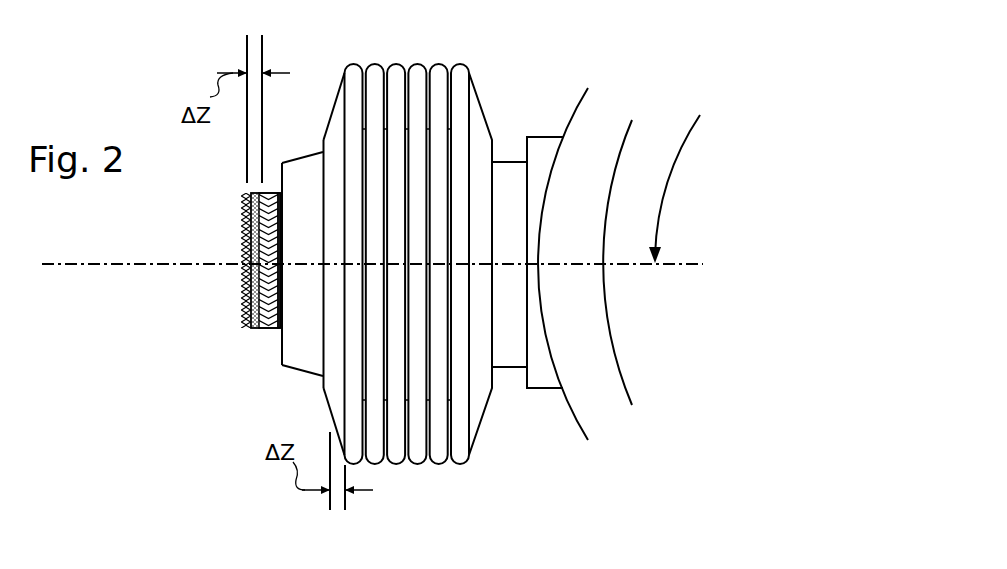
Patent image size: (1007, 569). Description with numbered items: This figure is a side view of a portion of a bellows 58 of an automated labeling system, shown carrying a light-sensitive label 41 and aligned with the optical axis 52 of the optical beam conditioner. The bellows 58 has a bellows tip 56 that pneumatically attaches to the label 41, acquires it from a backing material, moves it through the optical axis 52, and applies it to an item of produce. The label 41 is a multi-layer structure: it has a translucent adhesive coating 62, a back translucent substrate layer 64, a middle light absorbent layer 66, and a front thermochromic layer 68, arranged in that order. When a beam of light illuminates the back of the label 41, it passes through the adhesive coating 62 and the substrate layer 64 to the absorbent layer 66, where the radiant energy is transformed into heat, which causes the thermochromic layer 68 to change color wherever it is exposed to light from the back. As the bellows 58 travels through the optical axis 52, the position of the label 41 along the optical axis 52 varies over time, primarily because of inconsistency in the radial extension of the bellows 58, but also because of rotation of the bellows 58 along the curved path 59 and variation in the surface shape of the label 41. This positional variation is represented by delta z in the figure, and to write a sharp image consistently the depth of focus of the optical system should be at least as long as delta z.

The light-sensitive label 41 is at (244, 299).
The optical axis 52 is at (109, 262).
The bellows tip 56 is at (298, 158).
The bellows 58 is at (590, 58).
The curved path 59 is at (667, 178).
The translucent adhesive coating 62 is at (245, 329).
The translucent substrate layer 64 is at (257, 330).
The light absorbent layer 66 is at (267, 330).
The thermochromic layer 68 is at (274, 330).